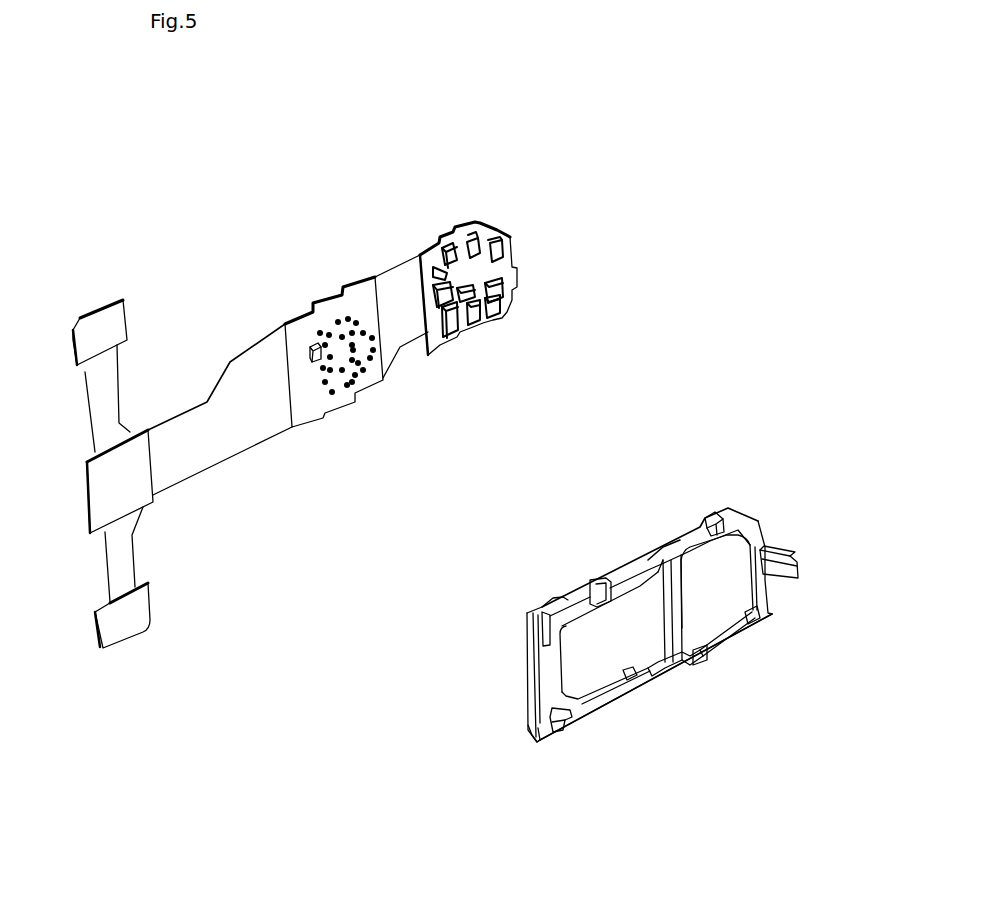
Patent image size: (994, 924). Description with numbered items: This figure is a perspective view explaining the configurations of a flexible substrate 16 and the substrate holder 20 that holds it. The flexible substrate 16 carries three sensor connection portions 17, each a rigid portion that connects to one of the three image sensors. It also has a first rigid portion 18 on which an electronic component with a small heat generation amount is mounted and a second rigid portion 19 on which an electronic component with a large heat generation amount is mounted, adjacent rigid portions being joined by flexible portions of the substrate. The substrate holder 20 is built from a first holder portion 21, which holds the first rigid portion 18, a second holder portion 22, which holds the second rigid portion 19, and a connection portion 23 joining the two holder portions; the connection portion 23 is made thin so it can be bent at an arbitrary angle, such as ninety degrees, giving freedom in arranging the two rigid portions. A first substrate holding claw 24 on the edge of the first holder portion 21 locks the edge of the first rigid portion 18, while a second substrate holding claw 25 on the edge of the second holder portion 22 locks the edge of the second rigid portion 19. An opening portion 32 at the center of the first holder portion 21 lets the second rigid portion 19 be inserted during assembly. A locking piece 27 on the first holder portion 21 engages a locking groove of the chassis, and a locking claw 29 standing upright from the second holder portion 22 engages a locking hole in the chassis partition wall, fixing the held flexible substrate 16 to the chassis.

The flexible substrate 16 is at (508, 204).
The sensor connection portion 17 is at (103, 320).
The first rigid portion 18 is at (337, 400).
The second rigid portion 19 is at (438, 342).
The substrate holder 20 is at (778, 490).
The first holder portion 21 is at (610, 698).
The second holder portion 22 is at (730, 643).
The connection portion 23 is at (647, 553).
The first substrate holding claw 24 is at (597, 583).
The second substrate holding claw 25 is at (727, 528).
The locking piece 27 is at (550, 600).
The locking claw 29 is at (800, 565).
The opening portion 32 is at (660, 670).